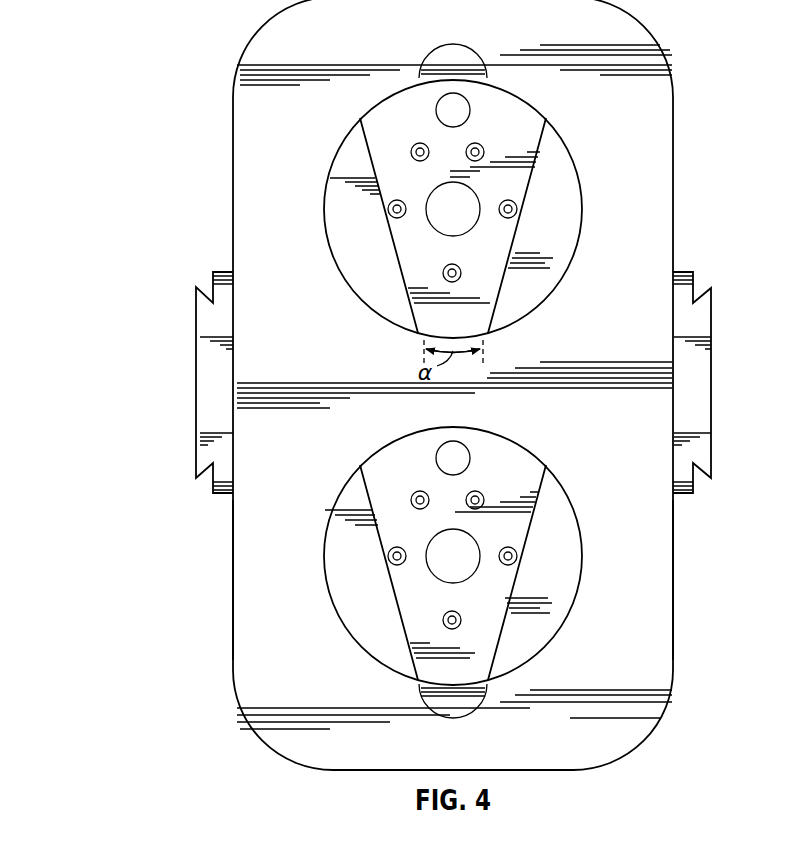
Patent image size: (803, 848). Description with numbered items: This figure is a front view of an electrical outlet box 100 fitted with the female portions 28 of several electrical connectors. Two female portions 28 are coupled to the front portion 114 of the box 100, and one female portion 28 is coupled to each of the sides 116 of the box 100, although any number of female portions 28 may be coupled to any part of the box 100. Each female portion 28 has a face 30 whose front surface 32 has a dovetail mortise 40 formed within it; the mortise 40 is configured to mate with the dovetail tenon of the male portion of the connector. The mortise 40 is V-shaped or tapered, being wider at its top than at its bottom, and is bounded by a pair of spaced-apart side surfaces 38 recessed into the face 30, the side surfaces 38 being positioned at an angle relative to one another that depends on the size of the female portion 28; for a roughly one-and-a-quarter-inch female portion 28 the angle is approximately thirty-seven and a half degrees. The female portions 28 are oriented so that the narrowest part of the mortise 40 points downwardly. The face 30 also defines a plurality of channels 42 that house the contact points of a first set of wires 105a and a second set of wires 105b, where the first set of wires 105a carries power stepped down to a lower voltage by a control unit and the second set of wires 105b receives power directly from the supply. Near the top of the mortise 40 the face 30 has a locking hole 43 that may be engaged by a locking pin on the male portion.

The electrical outlet box 100 is at (278, 37).
The female portion 28 is at (188, 342).
The face 30 is at (343, 242).
The front surface 32 is at (568, 171).
The side surfaces 38 is at (516, 232).
The dovetail mortise 40 is at (516, 104).
The channels 42 is at (481, 144).
The locking hole 43 is at (451, 109).
The first set of wires 105a is at (413, 151).
The second set of wires 105b is at (388, 209).
The front portion 114 is at (660, 664).
The sides 116 is at (233, 558).